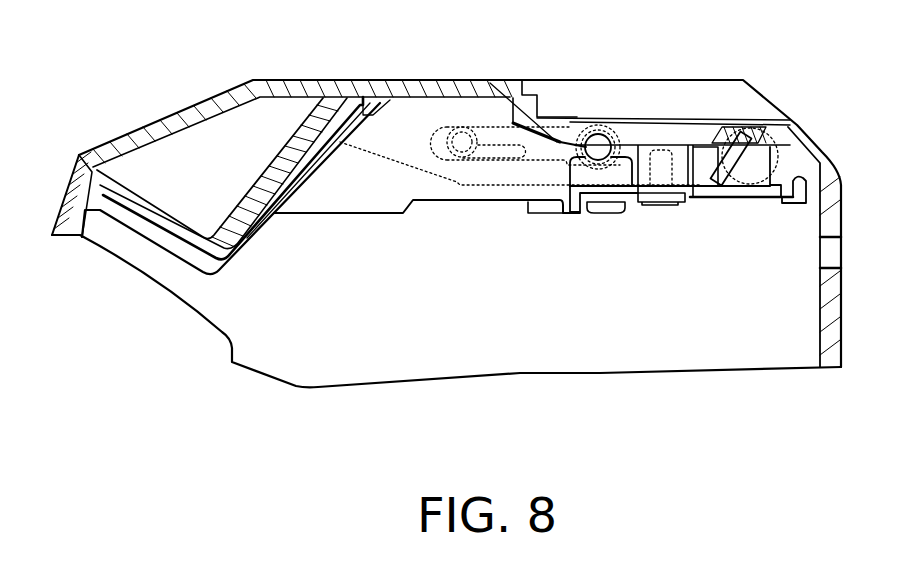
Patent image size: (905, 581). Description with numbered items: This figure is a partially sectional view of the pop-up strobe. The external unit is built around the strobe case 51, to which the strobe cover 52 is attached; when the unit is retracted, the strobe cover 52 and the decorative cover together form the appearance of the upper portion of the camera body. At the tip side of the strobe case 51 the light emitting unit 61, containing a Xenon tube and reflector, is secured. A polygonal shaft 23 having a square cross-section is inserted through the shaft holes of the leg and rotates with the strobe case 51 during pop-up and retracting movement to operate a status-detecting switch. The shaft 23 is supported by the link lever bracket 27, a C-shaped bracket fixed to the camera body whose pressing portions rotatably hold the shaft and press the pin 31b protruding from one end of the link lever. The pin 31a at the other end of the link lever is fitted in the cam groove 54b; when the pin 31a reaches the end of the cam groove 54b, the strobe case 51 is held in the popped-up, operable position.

The strobe cover 52 is at (210, 100).
The light emitting unit 61 is at (117, 256).
The strobe case 51 is at (718, 93).
The pin 31a is at (464, 135).
The pin 31b is at (602, 134).
The cam groove 54b is at (520, 148).
The polygonal shaft 23 is at (745, 142).
The link lever bracket 27 is at (713, 203).